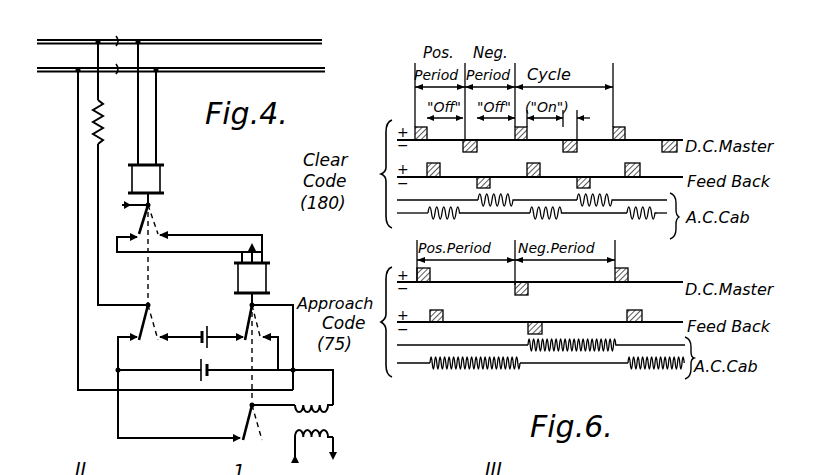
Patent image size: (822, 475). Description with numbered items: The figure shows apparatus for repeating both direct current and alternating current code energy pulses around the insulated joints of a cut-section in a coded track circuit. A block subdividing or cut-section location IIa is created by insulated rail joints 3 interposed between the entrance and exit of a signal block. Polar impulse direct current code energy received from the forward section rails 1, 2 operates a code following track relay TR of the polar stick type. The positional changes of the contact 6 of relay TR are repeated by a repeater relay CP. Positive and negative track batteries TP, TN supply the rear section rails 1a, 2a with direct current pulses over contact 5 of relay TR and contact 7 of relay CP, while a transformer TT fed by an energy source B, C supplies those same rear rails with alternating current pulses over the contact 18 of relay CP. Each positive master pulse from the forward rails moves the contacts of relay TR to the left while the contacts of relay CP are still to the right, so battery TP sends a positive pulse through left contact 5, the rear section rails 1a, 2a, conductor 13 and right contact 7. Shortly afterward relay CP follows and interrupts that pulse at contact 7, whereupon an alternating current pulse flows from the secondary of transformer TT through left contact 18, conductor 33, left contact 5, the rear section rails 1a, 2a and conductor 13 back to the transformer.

The forward section rail 1 is at (259, 39).
The forward section rail 2 is at (282, 72).
The rear section rail 1a is at (58, 37).
The rear section rail 2a is at (55, 73).
The cut-section location IIa is at (130, 32).
The insulated rail joints 3 is at (118, 50).
The conductor 13 is at (78, 316).
The code following track relay TR is at (152, 182).
The contact of track relay TR 6 is at (142, 222).
The repeater relay CP is at (258, 278).
The contact of track relay TR 5 is at (142, 322).
The negative track battery TN is at (200, 330).
The positive track battery TP is at (200, 362).
The contact of repeater relay CP 7 is at (248, 318).
The conductor 33 is at (118, 417).
The contact of repeater relay CP 18 is at (247, 422).
The transformer TT is at (326, 440).
The energy source terminal B is at (293, 456).
The energy source terminal C is at (340, 418).